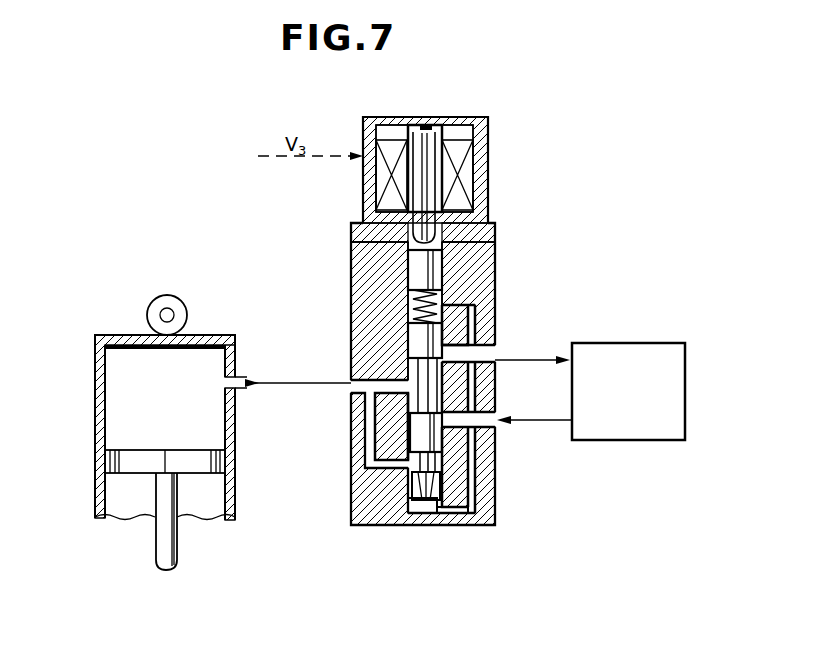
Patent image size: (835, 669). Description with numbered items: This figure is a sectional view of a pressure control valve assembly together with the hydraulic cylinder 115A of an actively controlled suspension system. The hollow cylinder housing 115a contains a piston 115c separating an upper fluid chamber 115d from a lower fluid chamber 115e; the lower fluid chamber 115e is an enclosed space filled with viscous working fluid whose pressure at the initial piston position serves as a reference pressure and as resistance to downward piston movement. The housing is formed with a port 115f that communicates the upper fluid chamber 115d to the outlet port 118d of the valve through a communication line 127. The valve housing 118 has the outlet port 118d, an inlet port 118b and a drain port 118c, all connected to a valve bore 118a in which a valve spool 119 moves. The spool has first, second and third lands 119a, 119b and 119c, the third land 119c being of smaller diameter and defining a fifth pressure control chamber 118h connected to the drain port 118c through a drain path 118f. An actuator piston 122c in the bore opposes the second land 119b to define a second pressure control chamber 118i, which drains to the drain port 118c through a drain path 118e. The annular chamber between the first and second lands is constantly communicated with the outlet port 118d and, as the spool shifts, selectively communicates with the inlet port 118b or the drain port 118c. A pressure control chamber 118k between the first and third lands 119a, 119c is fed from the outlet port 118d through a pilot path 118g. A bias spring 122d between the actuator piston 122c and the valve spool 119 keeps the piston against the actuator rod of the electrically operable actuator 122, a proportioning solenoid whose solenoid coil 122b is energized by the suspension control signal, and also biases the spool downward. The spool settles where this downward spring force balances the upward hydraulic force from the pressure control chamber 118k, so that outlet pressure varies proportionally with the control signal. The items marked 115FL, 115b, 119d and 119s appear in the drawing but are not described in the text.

The wheel cylinder (front left / rear right) 115FL is at (197, 333).
The hollow cylinder housing 115a is at (99, 418).
The hydraulic cylinder 115A is at (86, 460).
The piston rod 115b is at (180, 543).
The piston 115c is at (225, 465).
The upper fluid chamber 115d is at (115, 373).
The lower fluid chamber 115e is at (97, 512).
The port 115f is at (247, 377).
The communication line 127 is at (263, 388).
The electrically operable actuator 122 is at (489, 150).
The solenoid coil 122b is at (457, 140).
The actuator piston 122c is at (413, 262).
The bias spring 122d is at (411, 297).
The valve housing 118 is at (353, 527).
The valve bore 118a is at (409, 264).
The inlet port 118b is at (482, 430).
The drain port 118c is at (478, 330).
The outlet port 118d is at (371, 376).
The drain path 118e is at (476, 302).
The drain path 118f is at (458, 520).
The pilot path 118g is at (384, 481).
The fifth pressure control chamber 118h is at (447, 510).
The second pressure control chamber 118i is at (470, 267).
The pressure control chamber 118k is at (417, 518).
The valve spool 119 is at (412, 448).
The first land 119a is at (414, 420).
The second land 119b is at (411, 337).
The third land 119c is at (410, 488).
The drain port 119d is at (530, 362).
The supply port 119s is at (527, 420).